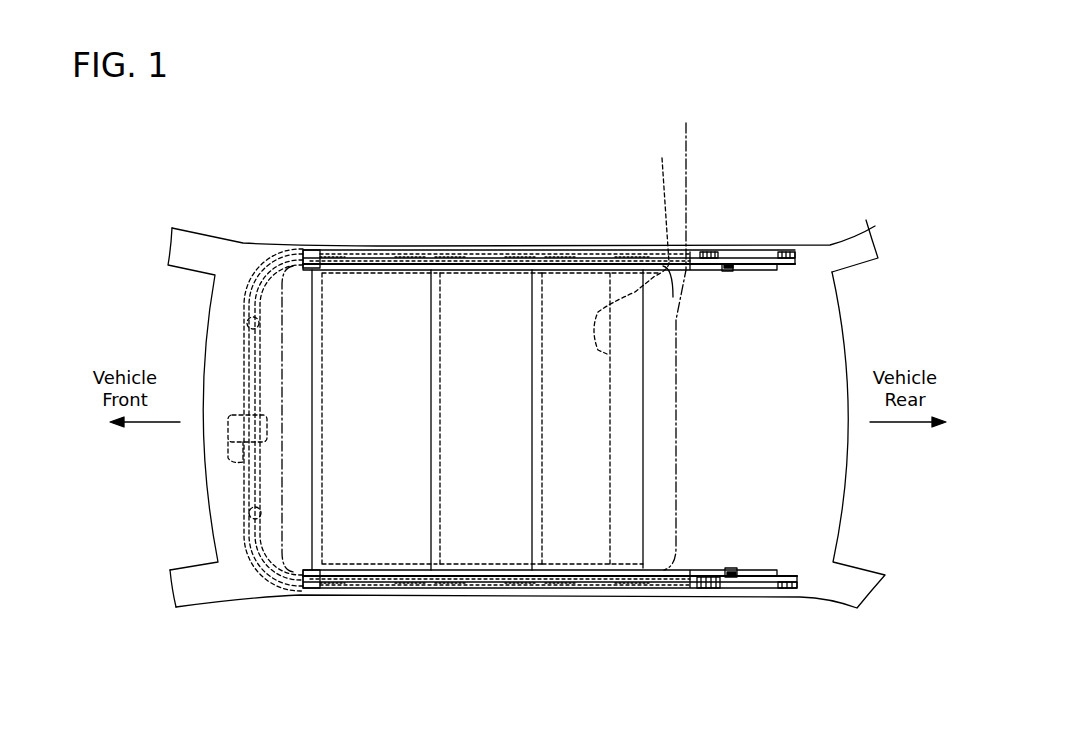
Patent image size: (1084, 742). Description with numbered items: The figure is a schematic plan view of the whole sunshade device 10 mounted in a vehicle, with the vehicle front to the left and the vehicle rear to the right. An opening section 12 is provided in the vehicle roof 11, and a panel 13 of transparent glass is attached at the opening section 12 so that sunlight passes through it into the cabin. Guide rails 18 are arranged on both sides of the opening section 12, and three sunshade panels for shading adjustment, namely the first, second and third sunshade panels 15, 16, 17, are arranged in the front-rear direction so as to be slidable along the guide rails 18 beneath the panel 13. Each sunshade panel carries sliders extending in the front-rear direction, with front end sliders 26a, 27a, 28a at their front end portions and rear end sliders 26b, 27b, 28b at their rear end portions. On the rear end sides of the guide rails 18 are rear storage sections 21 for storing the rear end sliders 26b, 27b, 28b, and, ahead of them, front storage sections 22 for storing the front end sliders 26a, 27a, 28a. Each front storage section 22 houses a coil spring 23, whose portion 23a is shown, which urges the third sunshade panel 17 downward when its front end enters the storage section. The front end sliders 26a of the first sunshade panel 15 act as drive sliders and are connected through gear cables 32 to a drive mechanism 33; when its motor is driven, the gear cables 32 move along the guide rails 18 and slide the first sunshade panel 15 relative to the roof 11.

The sunshade device 10 is at (618, 131).
The vehicle roof 11 is at (770, 355).
The opening section 12 is at (634, 246).
The panel 13 is at (490, 329).
The first sunshade panel 15 is at (386, 426).
The second sunshade panel 16 is at (489, 426).
The third sunshade panel 17 is at (589, 426).
The guide rails 18 is at (760, 252).
The rear storage sections 21 is at (792, 240).
The front storage sections 22 is at (707, 244).
The coil spring 23 is at (727, 272).
The protrusion of connecting member 23a is at (729, 270).
The front end sliders 26a is at (327, 243).
The rear end sliders 26b is at (413, 243).
The front end sliders 27a is at (443, 243).
The rear end sliders 27b is at (517, 243).
The front end sliders 28a is at (552, 243).
The rear end sliders 28b is at (628, 243).
The gear cables 32 is at (238, 272).
The drive mechanism 33 is at (210, 455).